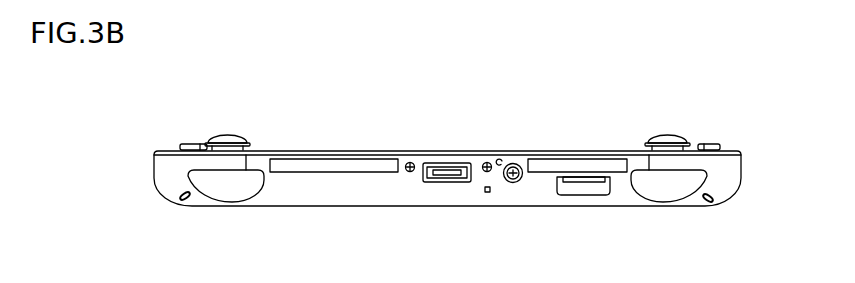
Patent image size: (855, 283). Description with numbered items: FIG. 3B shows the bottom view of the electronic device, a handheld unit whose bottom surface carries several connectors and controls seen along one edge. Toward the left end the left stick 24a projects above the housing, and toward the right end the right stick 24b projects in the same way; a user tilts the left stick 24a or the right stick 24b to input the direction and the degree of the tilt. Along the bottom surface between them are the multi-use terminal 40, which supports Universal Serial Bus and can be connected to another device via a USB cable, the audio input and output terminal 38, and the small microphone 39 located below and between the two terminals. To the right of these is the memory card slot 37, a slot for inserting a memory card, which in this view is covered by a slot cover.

The left stick 24a is at (225, 138).
The right stick 24b is at (668, 136).
The memory card slot 37 is at (583, 188).
The audio input and output terminal 38 is at (513, 163).
The microphone 39 is at (487, 193).
The multi-use terminal 40 is at (447, 163).